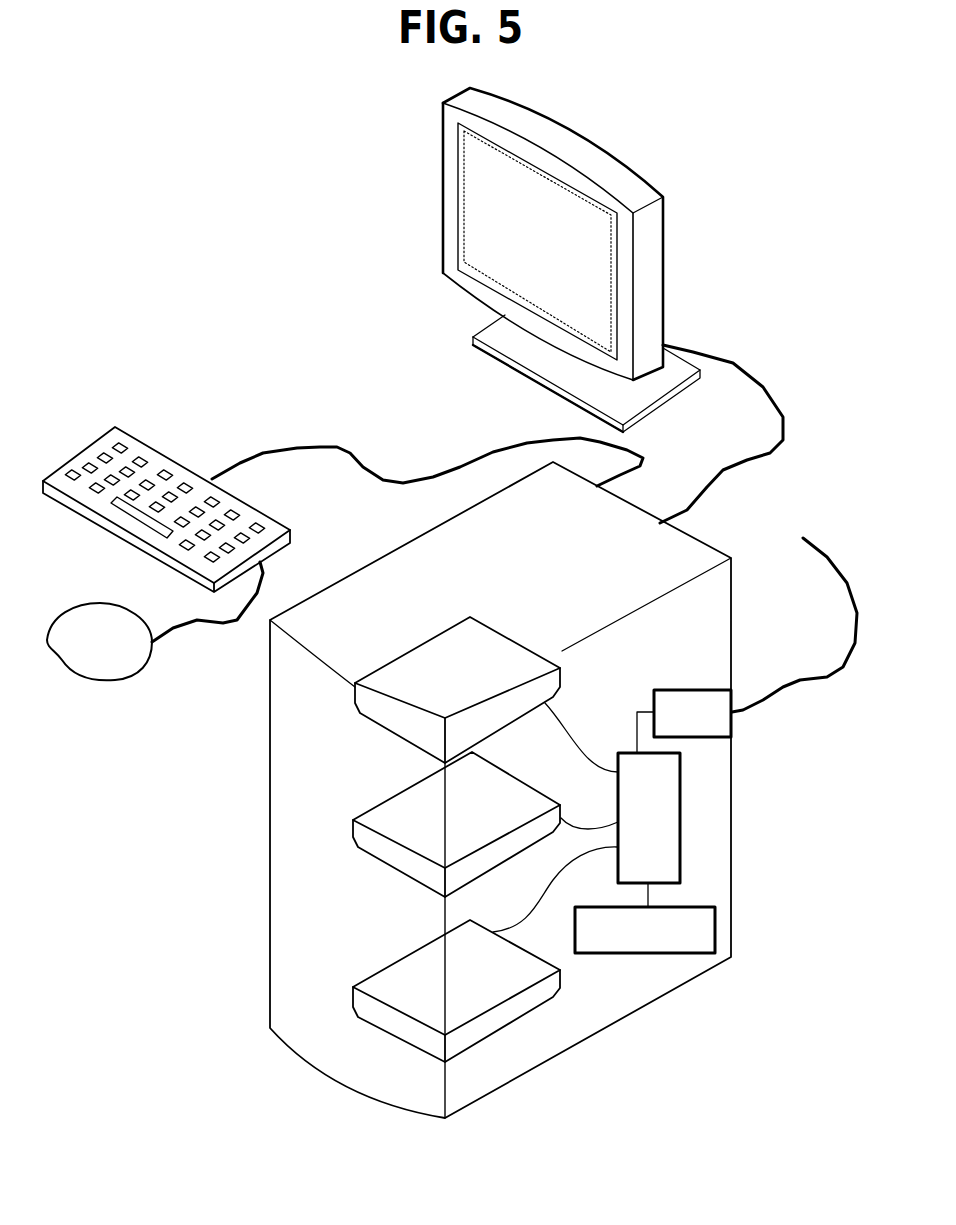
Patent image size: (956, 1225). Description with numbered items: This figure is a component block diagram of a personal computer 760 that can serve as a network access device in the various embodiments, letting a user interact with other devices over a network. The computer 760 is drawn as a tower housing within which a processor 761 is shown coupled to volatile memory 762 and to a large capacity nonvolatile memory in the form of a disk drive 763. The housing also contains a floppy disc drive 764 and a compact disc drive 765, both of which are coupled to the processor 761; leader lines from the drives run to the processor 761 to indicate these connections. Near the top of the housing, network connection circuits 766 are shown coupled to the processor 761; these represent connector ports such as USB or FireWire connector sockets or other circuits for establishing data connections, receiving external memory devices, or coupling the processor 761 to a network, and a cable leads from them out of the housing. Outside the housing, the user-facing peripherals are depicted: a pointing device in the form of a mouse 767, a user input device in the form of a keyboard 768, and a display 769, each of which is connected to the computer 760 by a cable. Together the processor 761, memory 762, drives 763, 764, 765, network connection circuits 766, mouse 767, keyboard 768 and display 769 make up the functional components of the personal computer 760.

The personal computer 760 is at (732, 585).
The processor 761 is at (586, 817).
The volatile memory 762 is at (645, 930).
The disk drive 763 is at (561, 988).
The floppy disc drive 764 is at (563, 690).
The compact disc (CD) drive 765 is at (508, 860).
The network connection circuits 766 is at (692, 713).
The mouse 767 is at (97, 683).
The keyboard 768 is at (292, 528).
The display 769 is at (665, 277).